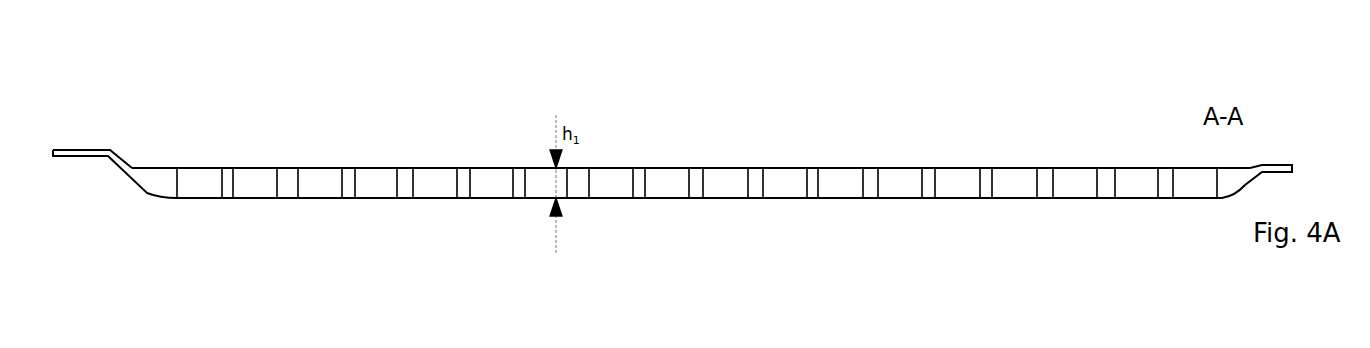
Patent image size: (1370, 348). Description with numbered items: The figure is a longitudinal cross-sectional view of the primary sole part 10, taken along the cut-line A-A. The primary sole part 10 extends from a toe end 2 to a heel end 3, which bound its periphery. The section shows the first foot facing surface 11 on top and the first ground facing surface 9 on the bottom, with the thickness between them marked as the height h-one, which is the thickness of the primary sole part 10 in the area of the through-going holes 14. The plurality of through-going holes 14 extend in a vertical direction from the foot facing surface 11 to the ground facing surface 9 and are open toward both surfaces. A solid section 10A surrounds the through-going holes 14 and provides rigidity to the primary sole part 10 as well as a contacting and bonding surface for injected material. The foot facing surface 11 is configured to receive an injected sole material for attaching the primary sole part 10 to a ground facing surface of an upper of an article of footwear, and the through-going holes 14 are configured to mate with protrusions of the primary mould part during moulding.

The toe end 2 is at (108, 150).
The heel end 3 is at (1230, 173).
The ground facing surface 9 is at (872, 198).
The primary sole part 10 is at (675, 152).
The solid section 10A is at (1173, 182).
The foot facing surface 11 is at (867, 168).
The through-going holes 14 is at (438, 182).